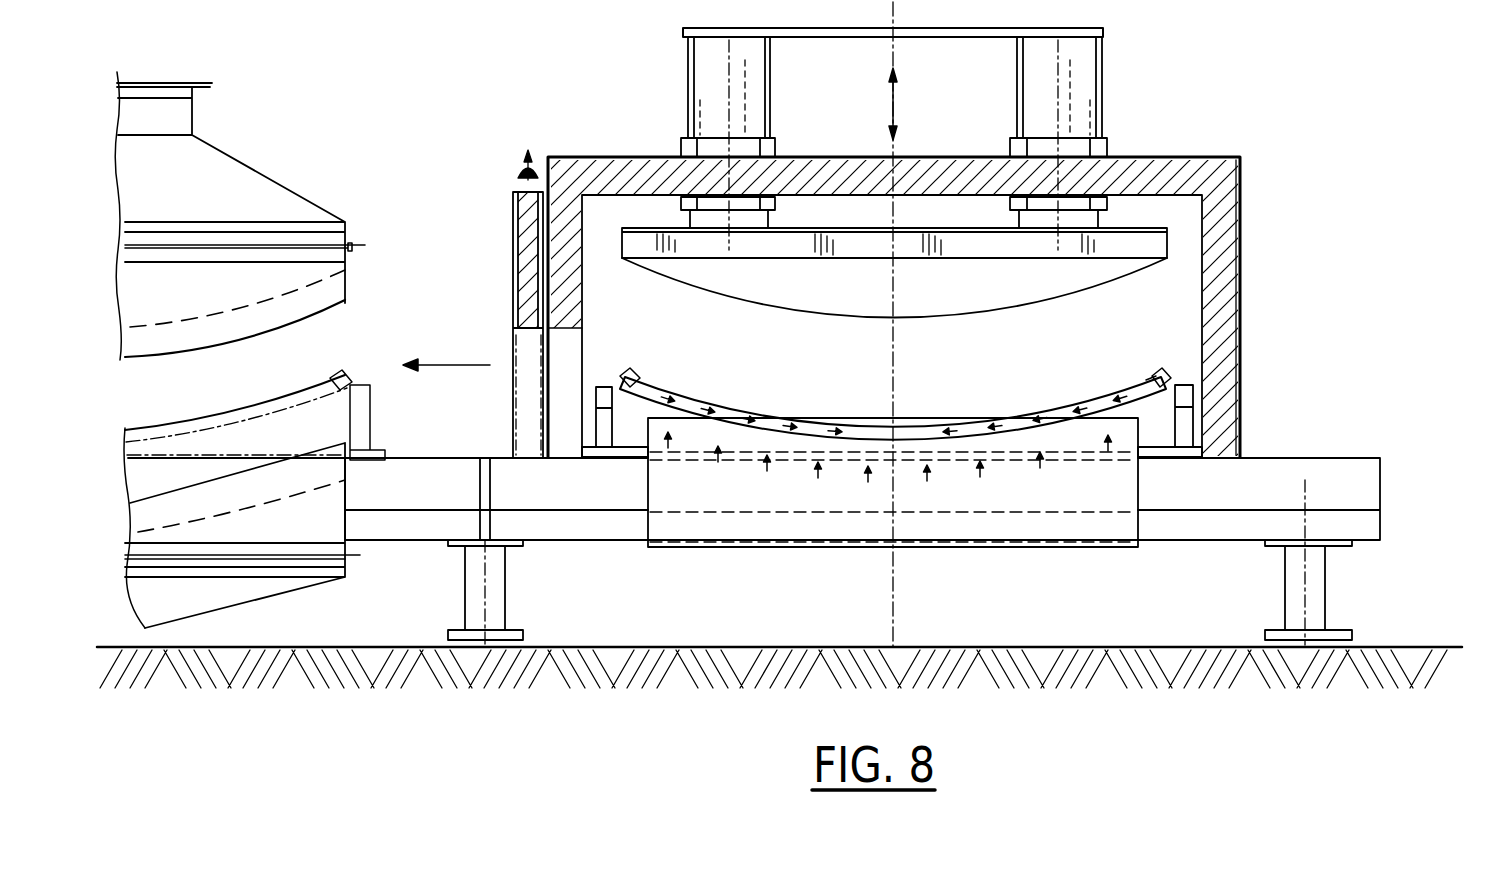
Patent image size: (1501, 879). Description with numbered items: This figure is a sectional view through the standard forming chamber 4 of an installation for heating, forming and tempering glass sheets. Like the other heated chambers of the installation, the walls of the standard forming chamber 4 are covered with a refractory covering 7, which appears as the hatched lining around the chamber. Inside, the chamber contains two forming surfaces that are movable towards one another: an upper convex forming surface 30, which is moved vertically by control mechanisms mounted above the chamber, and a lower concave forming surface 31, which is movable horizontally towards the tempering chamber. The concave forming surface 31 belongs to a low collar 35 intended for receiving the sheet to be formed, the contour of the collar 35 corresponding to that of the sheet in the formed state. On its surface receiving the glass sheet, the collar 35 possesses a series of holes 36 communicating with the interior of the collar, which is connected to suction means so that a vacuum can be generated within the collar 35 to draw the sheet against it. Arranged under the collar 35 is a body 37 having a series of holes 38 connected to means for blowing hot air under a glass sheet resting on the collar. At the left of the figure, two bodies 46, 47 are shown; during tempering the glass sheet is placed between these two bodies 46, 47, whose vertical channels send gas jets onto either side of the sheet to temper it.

The standard forming chamber 4 is at (924, 210).
The refractory covering 7 is at (1224, 266).
The convex forming surface 30 is at (894, 295).
The concave forming surface 31 is at (904, 378).
The low collar 35 is at (1127, 390).
The holes 36 is at (681, 408).
The body 37 is at (1120, 492).
The holes 38 is at (678, 432).
The body 46 is at (265, 202).
The body 47 is at (353, 387).